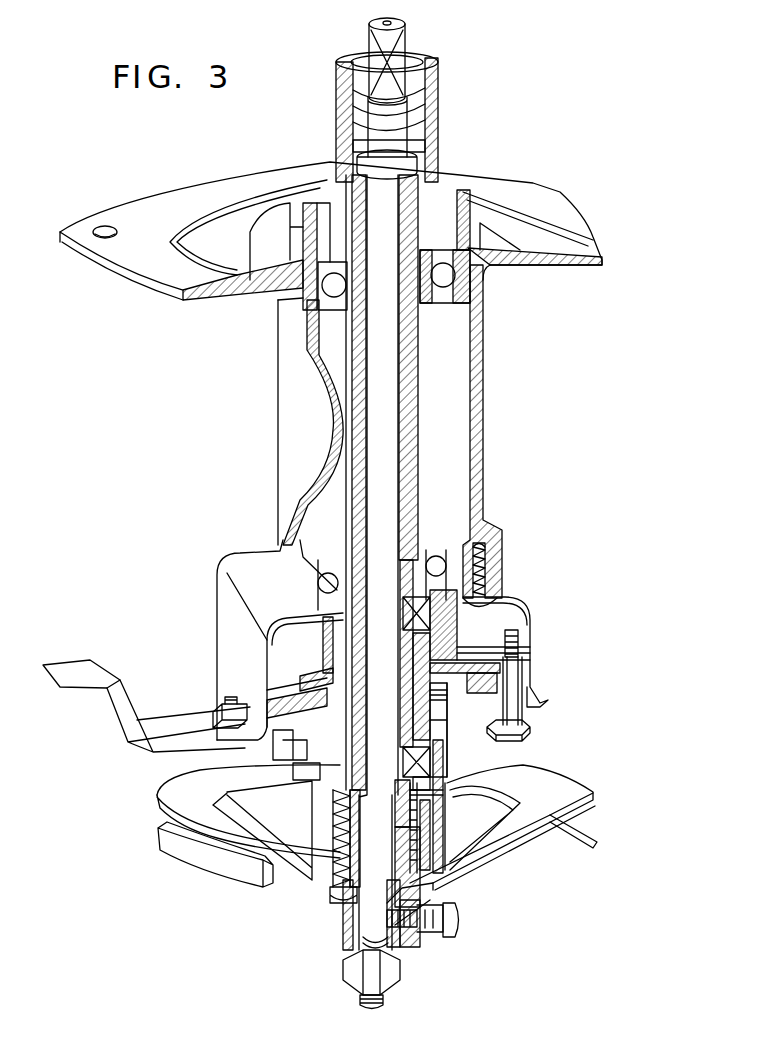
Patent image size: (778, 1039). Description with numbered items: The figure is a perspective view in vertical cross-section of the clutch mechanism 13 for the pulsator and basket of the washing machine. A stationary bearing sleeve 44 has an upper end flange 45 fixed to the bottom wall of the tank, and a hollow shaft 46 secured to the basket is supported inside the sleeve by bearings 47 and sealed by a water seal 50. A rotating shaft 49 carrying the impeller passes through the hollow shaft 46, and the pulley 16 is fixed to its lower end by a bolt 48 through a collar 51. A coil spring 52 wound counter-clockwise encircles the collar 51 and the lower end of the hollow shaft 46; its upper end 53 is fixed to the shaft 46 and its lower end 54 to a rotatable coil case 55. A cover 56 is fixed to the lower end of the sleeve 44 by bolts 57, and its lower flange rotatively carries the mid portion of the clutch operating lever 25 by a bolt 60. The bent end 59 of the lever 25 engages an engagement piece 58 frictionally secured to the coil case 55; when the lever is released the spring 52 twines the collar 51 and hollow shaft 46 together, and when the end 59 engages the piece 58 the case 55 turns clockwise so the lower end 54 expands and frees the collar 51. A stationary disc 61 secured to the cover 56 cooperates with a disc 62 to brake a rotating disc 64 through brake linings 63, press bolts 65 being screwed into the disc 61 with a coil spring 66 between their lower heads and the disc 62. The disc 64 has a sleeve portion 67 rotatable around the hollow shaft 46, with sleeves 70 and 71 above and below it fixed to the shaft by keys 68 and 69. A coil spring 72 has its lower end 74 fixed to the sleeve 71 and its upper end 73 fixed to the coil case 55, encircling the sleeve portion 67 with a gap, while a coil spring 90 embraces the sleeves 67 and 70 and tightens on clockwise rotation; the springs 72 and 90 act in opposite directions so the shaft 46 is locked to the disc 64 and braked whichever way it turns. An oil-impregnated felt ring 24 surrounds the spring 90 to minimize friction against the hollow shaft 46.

The control assembly 13 is at (177, 434).
The pulley 16 is at (208, 878).
The oil-impregnated felt ring 24 is at (300, 643).
The clutch operating lever 25 is at (118, 710).
The bearing sleeve 44 is at (486, 393).
The upper end flange 45 is at (150, 285).
The hollow shaft 46 is at (418, 380).
The bearings 47 is at (455, 276).
The bolt 48 is at (458, 933).
The rotating shaft 49 is at (385, 434).
The water seal 50 is at (450, 185).
The collar 51 is at (345, 914).
The coil spring 52 is at (418, 829).
The upper end of spring 53 is at (420, 815).
The lower end of spring 54 is at (432, 878).
The coil case 55 is at (320, 836).
The cover 56 is at (228, 621).
The bolts 57 is at (488, 592).
The engagement piece 58 is at (300, 766).
The end of lever 59 is at (285, 752).
The bolt 60 is at (213, 706).
The stationary disc 61 is at (518, 639).
The disc 62 is at (533, 672).
The brake linings 63 is at (478, 668).
The rotating disc 64 is at (470, 681).
The press bolts 65 is at (522, 723).
The coil spring 66 is at (527, 709).
The sleeve portion 67 is at (420, 742).
The key 68 is at (415, 625).
The key 69 is at (420, 774).
The sleeve 70 is at (400, 620).
The sleeve 71 is at (420, 788).
The coil spring 72 is at (448, 754).
The upper end of spring 73 is at (430, 698).
The lower end of spring 74 is at (370, 797).
The coil spring 90 is at (416, 660).